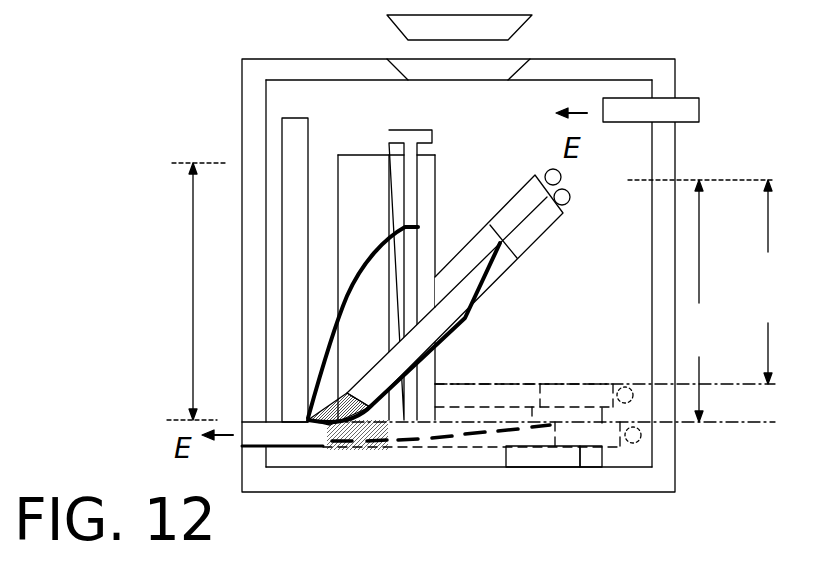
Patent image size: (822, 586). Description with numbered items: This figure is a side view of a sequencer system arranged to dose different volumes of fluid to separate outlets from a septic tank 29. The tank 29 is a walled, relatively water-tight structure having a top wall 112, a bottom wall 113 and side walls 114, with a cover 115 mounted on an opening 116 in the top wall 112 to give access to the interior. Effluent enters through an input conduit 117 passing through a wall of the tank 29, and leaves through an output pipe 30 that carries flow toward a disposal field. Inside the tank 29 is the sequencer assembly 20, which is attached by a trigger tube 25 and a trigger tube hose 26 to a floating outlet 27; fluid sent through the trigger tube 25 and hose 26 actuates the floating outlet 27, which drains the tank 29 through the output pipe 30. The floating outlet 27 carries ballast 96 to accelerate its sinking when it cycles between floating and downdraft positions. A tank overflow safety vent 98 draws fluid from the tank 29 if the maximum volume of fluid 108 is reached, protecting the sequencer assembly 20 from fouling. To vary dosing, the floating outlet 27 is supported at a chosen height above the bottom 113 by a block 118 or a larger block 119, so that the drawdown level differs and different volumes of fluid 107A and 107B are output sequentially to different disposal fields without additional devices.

The sequencer assembly 20 is at (436, 165).
The trigger tube 25 is at (419, 205).
The trigger hose 26 is at (368, 262).
The floating outlet 27 is at (580, 422).
The septic tank 29 is at (684, 167).
The output pipe 30 is at (267, 438).
The ballast 96 is at (543, 217).
The tank overflow safety vent 98 is at (300, 150).
The volume of fluid 107A is at (552, 301).
The volume of fluid 107B is at (605, 282).
The maximum volume of fluid 108 is at (160, 291).
The top wall 112 is at (675, 81).
The bottom wall 113 is at (383, 477).
The side wall 114 is at (252, 92).
The cover 115 is at (386, 19).
The opening 116 is at (520, 72).
The input conduit 117 is at (699, 122).
The block 118 is at (540, 457).
The larger block 119 is at (592, 413).